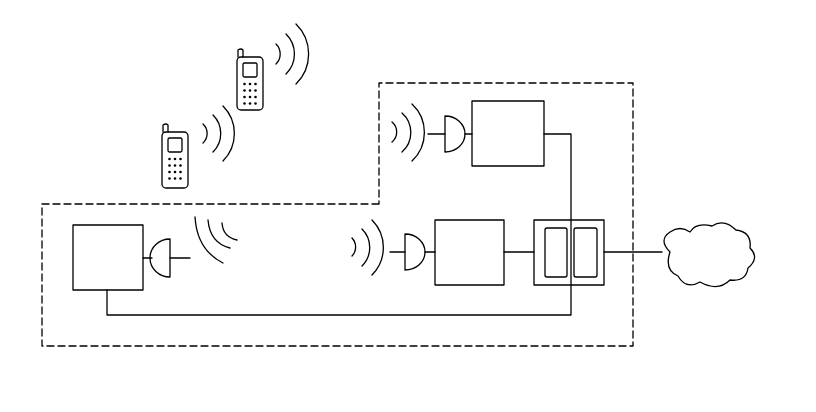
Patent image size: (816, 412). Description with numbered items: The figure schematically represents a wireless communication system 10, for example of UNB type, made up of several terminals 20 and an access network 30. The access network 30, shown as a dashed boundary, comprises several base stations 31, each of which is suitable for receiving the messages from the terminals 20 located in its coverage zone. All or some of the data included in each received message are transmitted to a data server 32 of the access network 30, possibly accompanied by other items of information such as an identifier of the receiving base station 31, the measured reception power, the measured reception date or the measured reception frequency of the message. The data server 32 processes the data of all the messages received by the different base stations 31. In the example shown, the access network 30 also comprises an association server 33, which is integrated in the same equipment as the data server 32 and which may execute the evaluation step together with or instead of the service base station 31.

The wireless communication system 10 is at (134, 48).
The terminal 20 is at (237, 79).
The access network 30 is at (633, 112).
The base station 31 is at (472, 103).
The data server 32 is at (591, 228).
The association server 33 is at (556, 278).